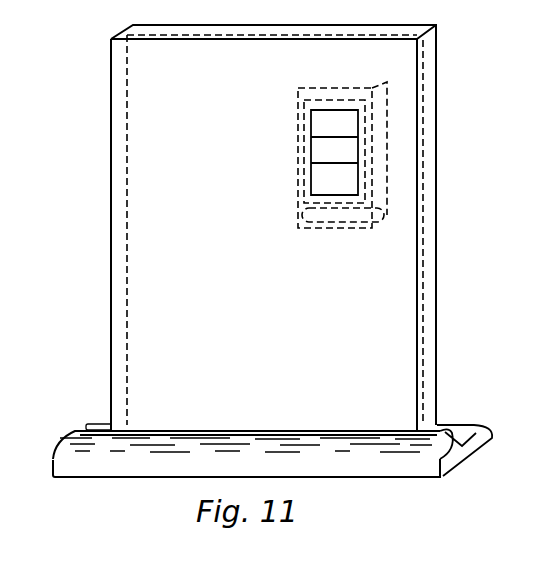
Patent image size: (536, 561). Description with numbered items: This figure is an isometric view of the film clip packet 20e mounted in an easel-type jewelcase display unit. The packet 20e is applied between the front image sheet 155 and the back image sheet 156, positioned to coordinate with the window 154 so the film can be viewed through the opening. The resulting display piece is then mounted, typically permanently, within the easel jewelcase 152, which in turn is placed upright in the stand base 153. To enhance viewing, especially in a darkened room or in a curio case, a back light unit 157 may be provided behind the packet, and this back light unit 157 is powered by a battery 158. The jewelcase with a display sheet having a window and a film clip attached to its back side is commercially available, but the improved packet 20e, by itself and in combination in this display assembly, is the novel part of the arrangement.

The easel jewelcase 152 is at (437, 232).
The stand base 153 is at (352, 464).
The window 154 is at (311, 160).
The front image sheet 155 is at (248, 297).
The back image sheet 156 is at (418, 167).
The back light unit 157 is at (345, 86).
The battery 158 is at (352, 226).
The film clip packet 20e is at (349, 84).